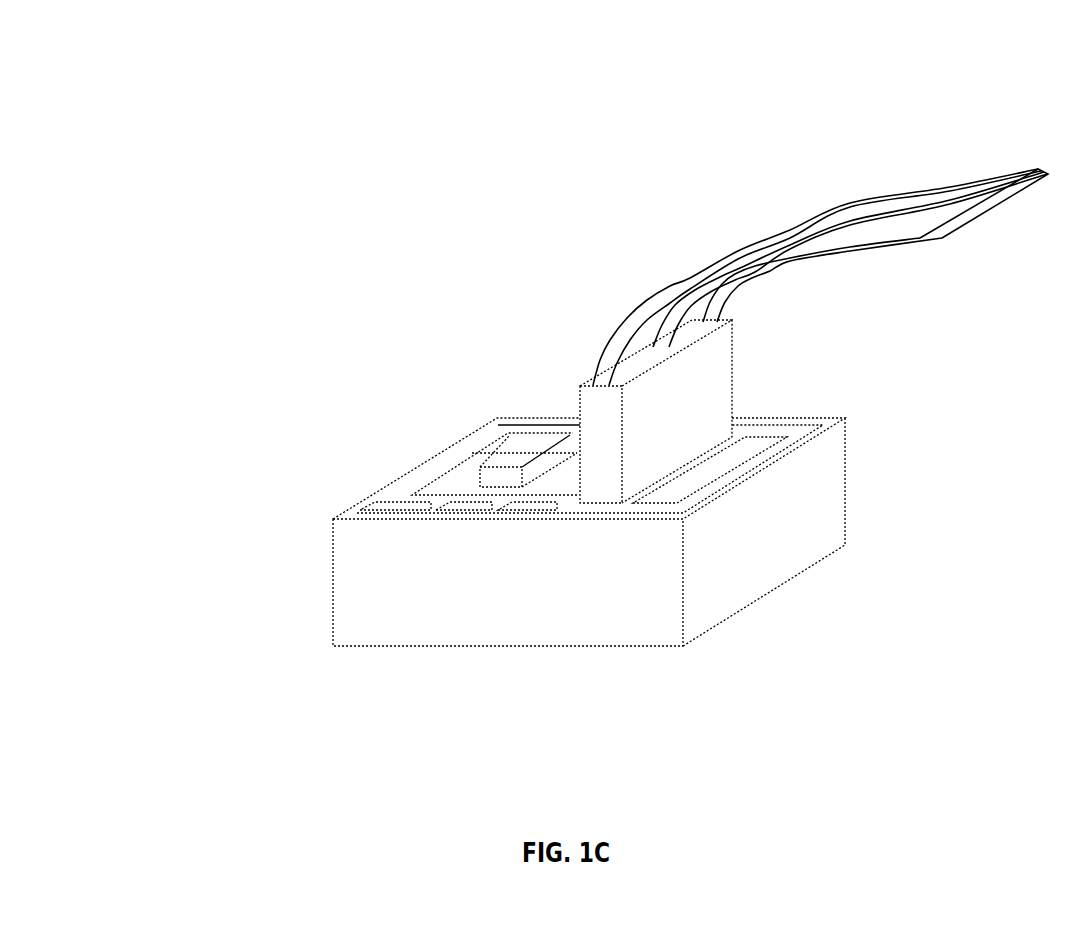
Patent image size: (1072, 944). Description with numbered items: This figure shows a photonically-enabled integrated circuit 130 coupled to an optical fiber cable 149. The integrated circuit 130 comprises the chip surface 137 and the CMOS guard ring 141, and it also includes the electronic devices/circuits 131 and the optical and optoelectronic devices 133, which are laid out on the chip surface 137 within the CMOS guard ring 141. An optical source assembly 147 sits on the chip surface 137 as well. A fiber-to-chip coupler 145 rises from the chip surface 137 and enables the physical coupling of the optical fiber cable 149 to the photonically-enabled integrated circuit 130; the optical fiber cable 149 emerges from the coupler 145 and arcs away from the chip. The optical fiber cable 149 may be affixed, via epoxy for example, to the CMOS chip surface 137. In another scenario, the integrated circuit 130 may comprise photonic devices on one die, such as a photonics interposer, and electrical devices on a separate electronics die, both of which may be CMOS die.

The photonically-enabled integrated circuit 130 is at (192, 114).
The electronic devices/circuits 131 is at (518, 511).
The optical and optoelectronic devices 133 is at (472, 493).
The chip surface 137 is at (457, 470).
The CMOS guard ring 141 is at (833, 417).
The fiber-to-chip coupler 145 is at (693, 423).
The optical source assembly 147 is at (534, 446).
The optical fiber cable 149 is at (872, 195).